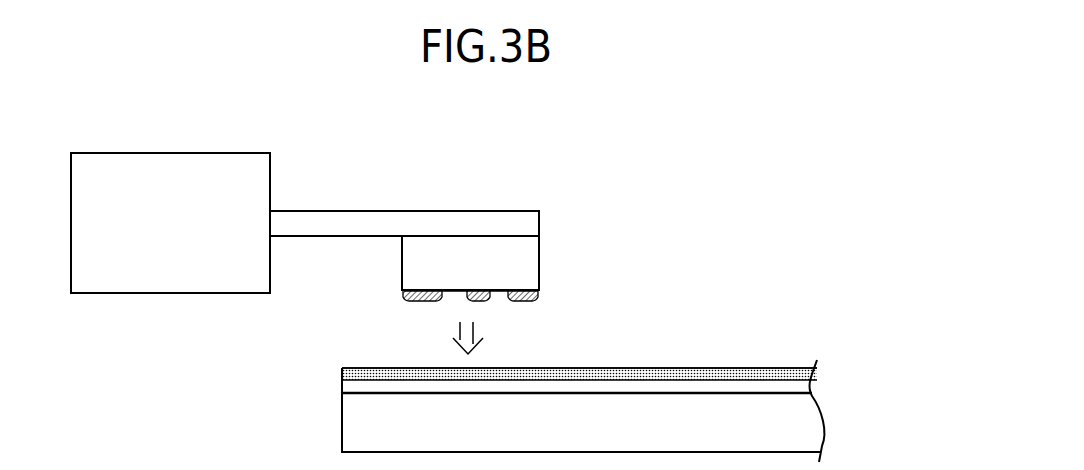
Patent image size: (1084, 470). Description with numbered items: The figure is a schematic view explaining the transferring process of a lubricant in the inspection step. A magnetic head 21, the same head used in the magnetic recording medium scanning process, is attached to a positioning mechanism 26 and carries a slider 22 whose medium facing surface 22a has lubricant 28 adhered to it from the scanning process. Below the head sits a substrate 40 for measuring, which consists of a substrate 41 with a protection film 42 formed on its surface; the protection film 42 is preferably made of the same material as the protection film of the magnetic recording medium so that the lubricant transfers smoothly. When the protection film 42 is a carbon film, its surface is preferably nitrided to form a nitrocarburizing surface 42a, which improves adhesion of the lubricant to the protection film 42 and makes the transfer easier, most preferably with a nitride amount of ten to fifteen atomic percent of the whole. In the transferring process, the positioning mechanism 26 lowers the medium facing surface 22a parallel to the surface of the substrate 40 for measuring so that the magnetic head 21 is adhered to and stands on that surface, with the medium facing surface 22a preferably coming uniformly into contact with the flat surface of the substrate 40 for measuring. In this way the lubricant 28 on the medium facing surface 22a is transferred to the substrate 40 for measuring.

The magnetic head 21 is at (510, 184).
The slider 22 is at (540, 247).
The medium facing surface 22a is at (455, 293).
The positioning mechanism 26 is at (207, 153).
The lubricant 28 is at (540, 292).
The substrate for measuring 40 is at (836, 322).
The substrate 41 is at (822, 420).
The protection film 42 is at (817, 378).
The nitrocarburizing surface 42a is at (670, 372).